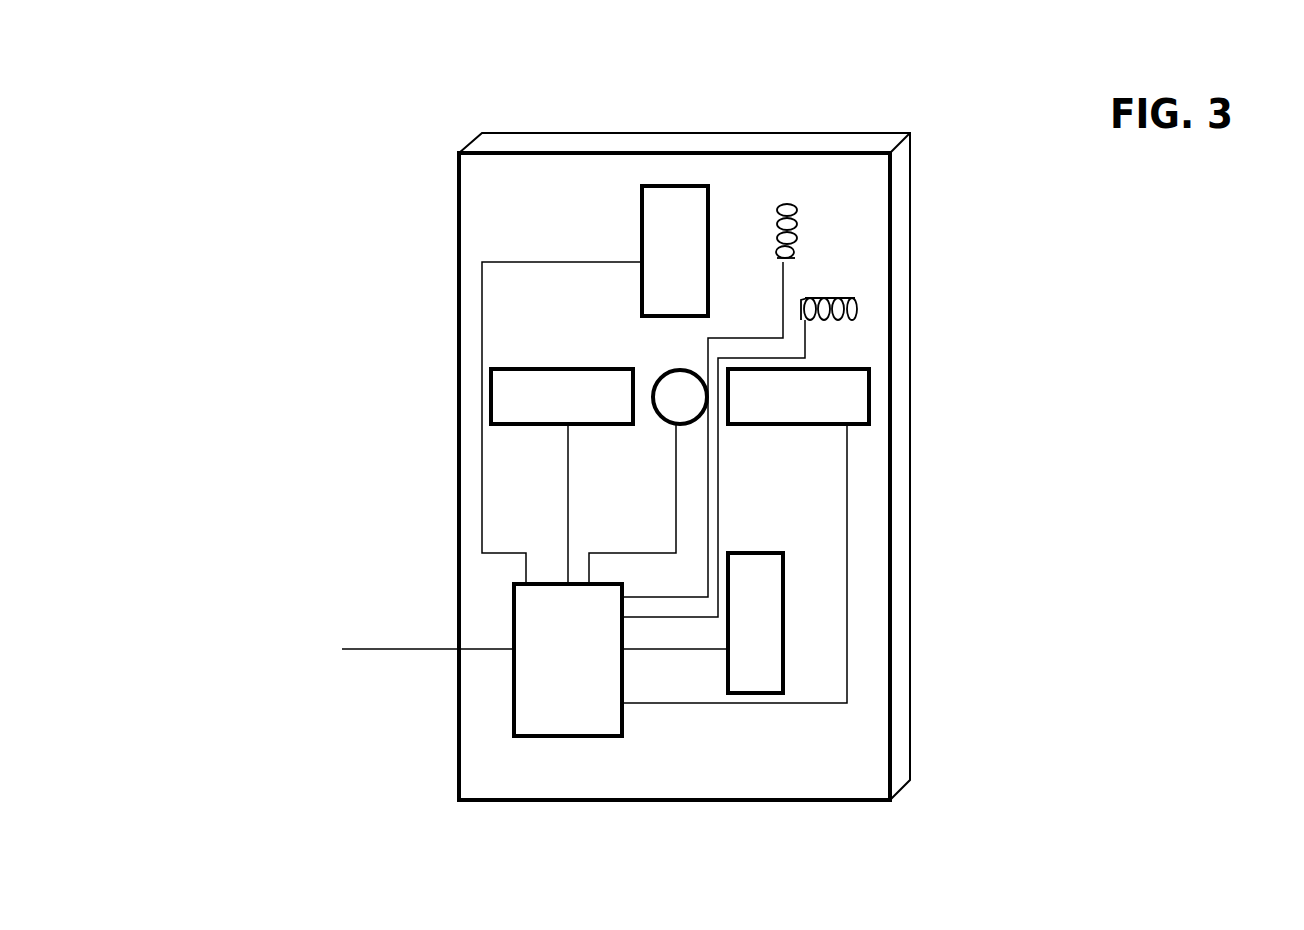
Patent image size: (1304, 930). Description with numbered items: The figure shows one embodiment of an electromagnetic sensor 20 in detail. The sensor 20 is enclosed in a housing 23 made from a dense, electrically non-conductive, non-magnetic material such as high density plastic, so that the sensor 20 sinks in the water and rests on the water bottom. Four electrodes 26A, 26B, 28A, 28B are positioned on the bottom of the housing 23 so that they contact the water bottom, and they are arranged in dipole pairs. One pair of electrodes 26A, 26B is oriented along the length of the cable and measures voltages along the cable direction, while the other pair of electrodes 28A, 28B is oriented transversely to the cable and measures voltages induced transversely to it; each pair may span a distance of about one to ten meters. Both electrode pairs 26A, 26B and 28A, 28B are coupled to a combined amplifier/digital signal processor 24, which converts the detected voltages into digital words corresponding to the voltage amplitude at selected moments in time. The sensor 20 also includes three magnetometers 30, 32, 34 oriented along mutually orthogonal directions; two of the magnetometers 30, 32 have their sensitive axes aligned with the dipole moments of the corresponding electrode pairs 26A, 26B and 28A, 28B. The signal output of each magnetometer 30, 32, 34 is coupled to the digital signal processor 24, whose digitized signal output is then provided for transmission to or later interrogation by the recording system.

The sensor 20 is at (596, 846).
The housing 23 is at (742, 802).
The combined amplifier/digital signal processor 24 is at (510, 715).
The electrode 26A is at (514, 391).
The electrode 26B is at (848, 391).
The electrode 28A is at (762, 607).
The electrode 28B is at (675, 230).
The magnetometer 30 is at (798, 230).
The magnetometer 32 is at (857, 305).
The magnetometer 34 is at (685, 401).